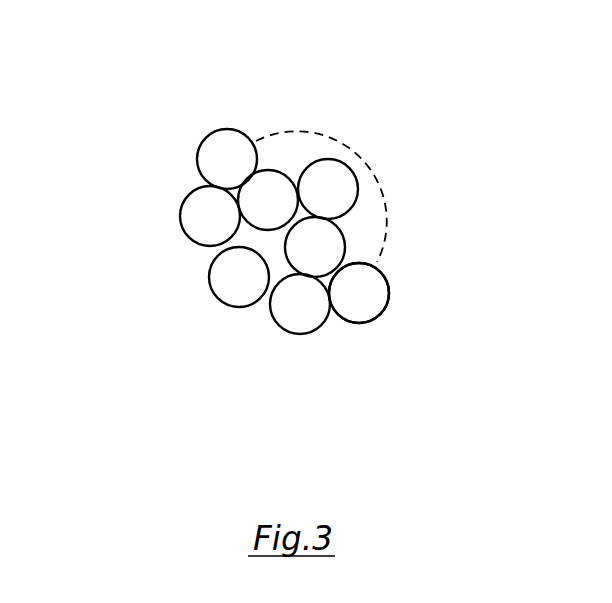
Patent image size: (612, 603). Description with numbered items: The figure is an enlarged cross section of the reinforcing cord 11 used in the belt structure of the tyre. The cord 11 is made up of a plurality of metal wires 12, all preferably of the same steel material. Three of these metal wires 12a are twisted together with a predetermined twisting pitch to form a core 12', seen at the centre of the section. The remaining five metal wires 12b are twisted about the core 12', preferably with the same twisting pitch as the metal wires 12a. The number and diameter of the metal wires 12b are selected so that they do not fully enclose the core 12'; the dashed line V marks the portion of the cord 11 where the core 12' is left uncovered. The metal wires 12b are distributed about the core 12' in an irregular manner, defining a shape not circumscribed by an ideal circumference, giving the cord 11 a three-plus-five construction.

The cord 11 is at (110, 128).
The metal wires 12 is at (408, 312).
The core 12' is at (455, 192).
The metal wires 12a is at (273, 190).
The metal wires 12b is at (219, 147).
The dashed line V is at (337, 138).